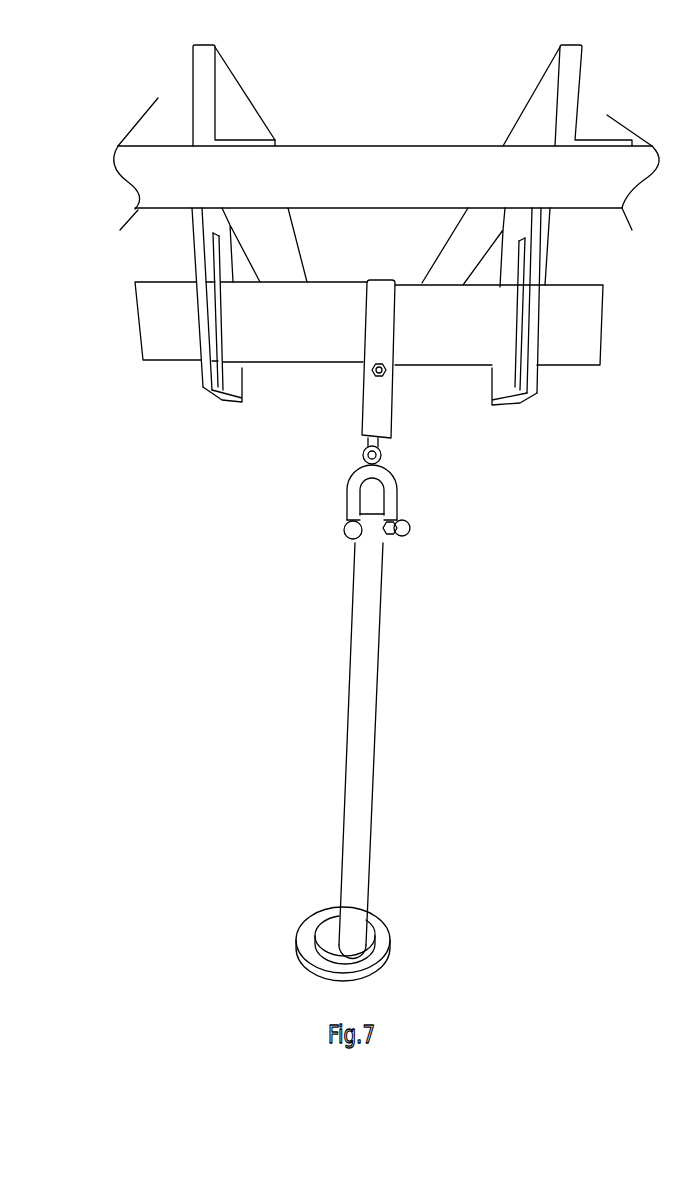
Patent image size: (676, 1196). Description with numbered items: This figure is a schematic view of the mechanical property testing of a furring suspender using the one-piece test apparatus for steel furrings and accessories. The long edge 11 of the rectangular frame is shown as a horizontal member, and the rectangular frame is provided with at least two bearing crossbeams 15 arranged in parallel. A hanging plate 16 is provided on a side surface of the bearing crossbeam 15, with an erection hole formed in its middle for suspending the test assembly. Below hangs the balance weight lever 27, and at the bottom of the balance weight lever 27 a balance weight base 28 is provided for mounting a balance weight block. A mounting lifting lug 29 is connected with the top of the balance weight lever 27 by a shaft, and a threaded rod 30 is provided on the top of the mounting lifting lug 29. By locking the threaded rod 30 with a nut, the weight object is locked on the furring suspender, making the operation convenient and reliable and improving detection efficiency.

The long edge 11 is at (185, 177).
The bearing crossbeam 15 is at (238, 112).
The hanging plate 16 is at (220, 397).
The balance weight lever 27 is at (370, 632).
The balance weight base 28 is at (388, 940).
The mounting lifting lug 29 is at (347, 488).
The threaded rod 30 is at (382, 457).